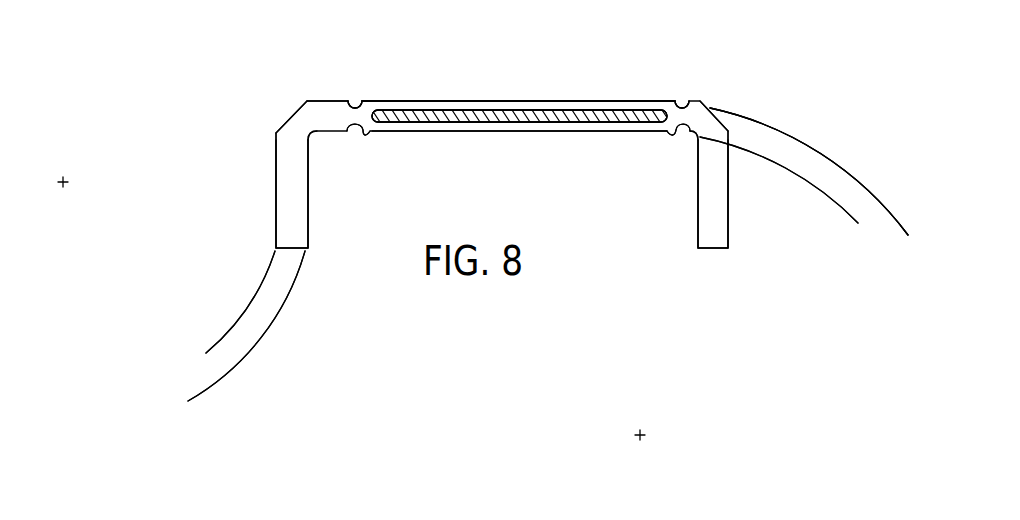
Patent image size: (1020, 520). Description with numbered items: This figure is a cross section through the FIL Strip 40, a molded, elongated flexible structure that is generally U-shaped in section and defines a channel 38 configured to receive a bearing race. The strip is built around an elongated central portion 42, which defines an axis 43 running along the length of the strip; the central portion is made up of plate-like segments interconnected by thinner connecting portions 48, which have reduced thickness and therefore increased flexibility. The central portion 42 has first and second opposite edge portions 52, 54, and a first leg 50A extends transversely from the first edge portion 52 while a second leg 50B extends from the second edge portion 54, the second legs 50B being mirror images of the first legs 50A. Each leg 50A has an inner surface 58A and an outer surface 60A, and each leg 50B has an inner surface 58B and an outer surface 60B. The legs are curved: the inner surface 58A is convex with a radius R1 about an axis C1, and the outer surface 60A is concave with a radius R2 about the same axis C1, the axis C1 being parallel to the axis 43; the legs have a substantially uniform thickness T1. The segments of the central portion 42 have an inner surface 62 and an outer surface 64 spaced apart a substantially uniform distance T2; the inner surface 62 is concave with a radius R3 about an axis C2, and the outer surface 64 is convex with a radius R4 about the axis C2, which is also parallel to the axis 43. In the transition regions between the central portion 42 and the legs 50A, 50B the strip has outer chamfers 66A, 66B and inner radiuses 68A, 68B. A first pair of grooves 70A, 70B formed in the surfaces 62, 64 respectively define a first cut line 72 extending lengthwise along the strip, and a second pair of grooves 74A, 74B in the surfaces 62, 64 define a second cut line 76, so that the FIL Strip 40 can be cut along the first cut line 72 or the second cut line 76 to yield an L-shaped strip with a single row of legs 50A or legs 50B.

The channel 38 is at (525, 210).
The FIL Strip 40 is at (240, 76).
The elongated central portion 42 is at (503, 100).
The axis 43 is at (518, 117).
The connecting portions 48 is at (544, 110).
The first legs 50A is at (276, 195).
The second legs 50B is at (729, 178).
The first edge portion 52 is at (318, 99).
The second edge portion 54 is at (677, 98).
The inner surfaces of legs 50A 58A is at (308, 228).
The inner surfaces of legs 50B 58B is at (696, 232).
The outer surfaces of legs 50A 60A is at (276, 226).
The outer surfaces of legs 50B 60B is at (730, 234).
The inner surface 62 is at (443, 132).
The outer surface 64 is at (441, 100).
The outer chamfer 66A is at (290, 118).
The outer chamfer 66B is at (712, 109).
The inner radius 68A is at (310, 134).
The inner radius 68B is at (694, 139).
The groove 70A is at (383, 132).
The groove 70B is at (356, 106).
The first cut line 72 is at (350, 103).
The groove 74A is at (680, 134).
The groove 74B is at (683, 107).
The second cut line 76 is at (701, 100).
The leg thickness T1 is at (330, 168).
The central portion thickness T2 is at (407, 156).
The inner leg surface radius R1 is at (63, 182).
The outer leg surface radius R2 is at (196, 384).
The inner surface radius R3 is at (640, 435).
The outer surface radius R4 is at (640, 435).
The axis C1 is at (64, 180).
The axis C2 is at (638, 436).